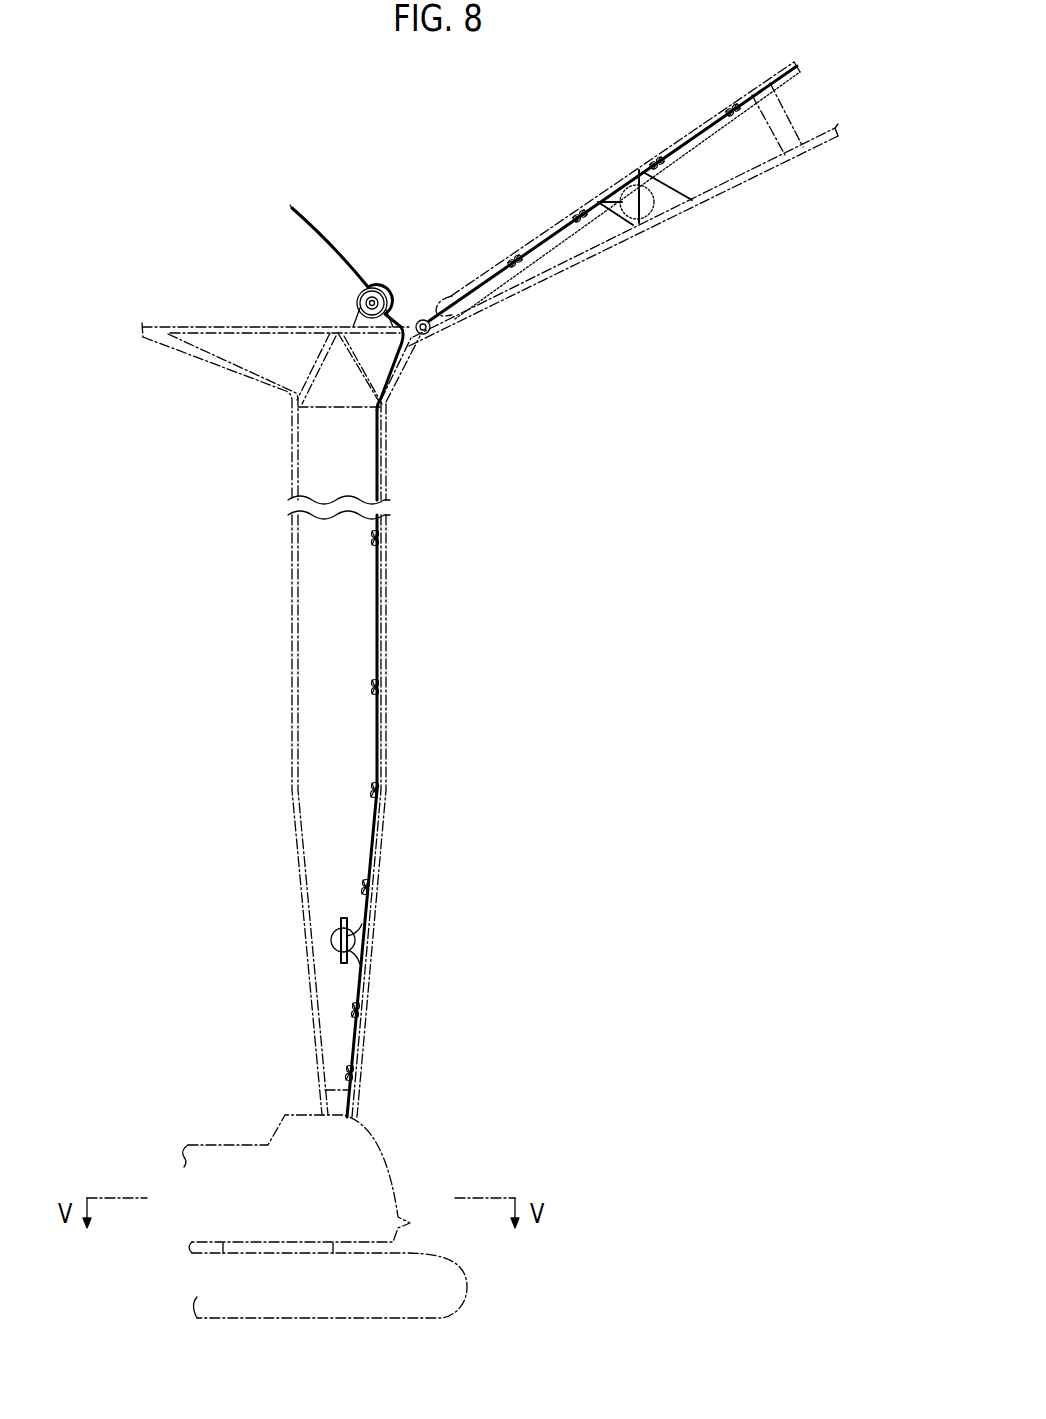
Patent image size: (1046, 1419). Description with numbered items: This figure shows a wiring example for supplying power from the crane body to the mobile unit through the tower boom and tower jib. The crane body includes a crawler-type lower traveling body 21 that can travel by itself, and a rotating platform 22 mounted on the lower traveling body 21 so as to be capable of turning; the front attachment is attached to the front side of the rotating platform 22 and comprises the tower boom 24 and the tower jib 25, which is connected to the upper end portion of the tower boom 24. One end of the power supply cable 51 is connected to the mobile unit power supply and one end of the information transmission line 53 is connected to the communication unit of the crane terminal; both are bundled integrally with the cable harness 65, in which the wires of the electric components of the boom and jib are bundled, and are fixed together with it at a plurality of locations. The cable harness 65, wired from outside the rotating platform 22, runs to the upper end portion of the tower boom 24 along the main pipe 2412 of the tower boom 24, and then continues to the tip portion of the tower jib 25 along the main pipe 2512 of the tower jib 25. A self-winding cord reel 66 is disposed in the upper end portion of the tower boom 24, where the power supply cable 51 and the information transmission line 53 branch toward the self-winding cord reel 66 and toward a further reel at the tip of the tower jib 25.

The lower traveling body 21 is at (468, 1287).
The rotating platform 22 is at (188, 1143).
The tower boom 24 is at (292, 672).
The tower jib 25 is at (733, 185).
The power supply cable 51 is at (317, 233).
The information transmission line 53 is at (382, 620).
The cable harness 65 is at (362, 950).
The self-winding cord reel 66 is at (378, 287).
The main pipe 2412 is at (387, 753).
The main pipe 2512 is at (613, 182).